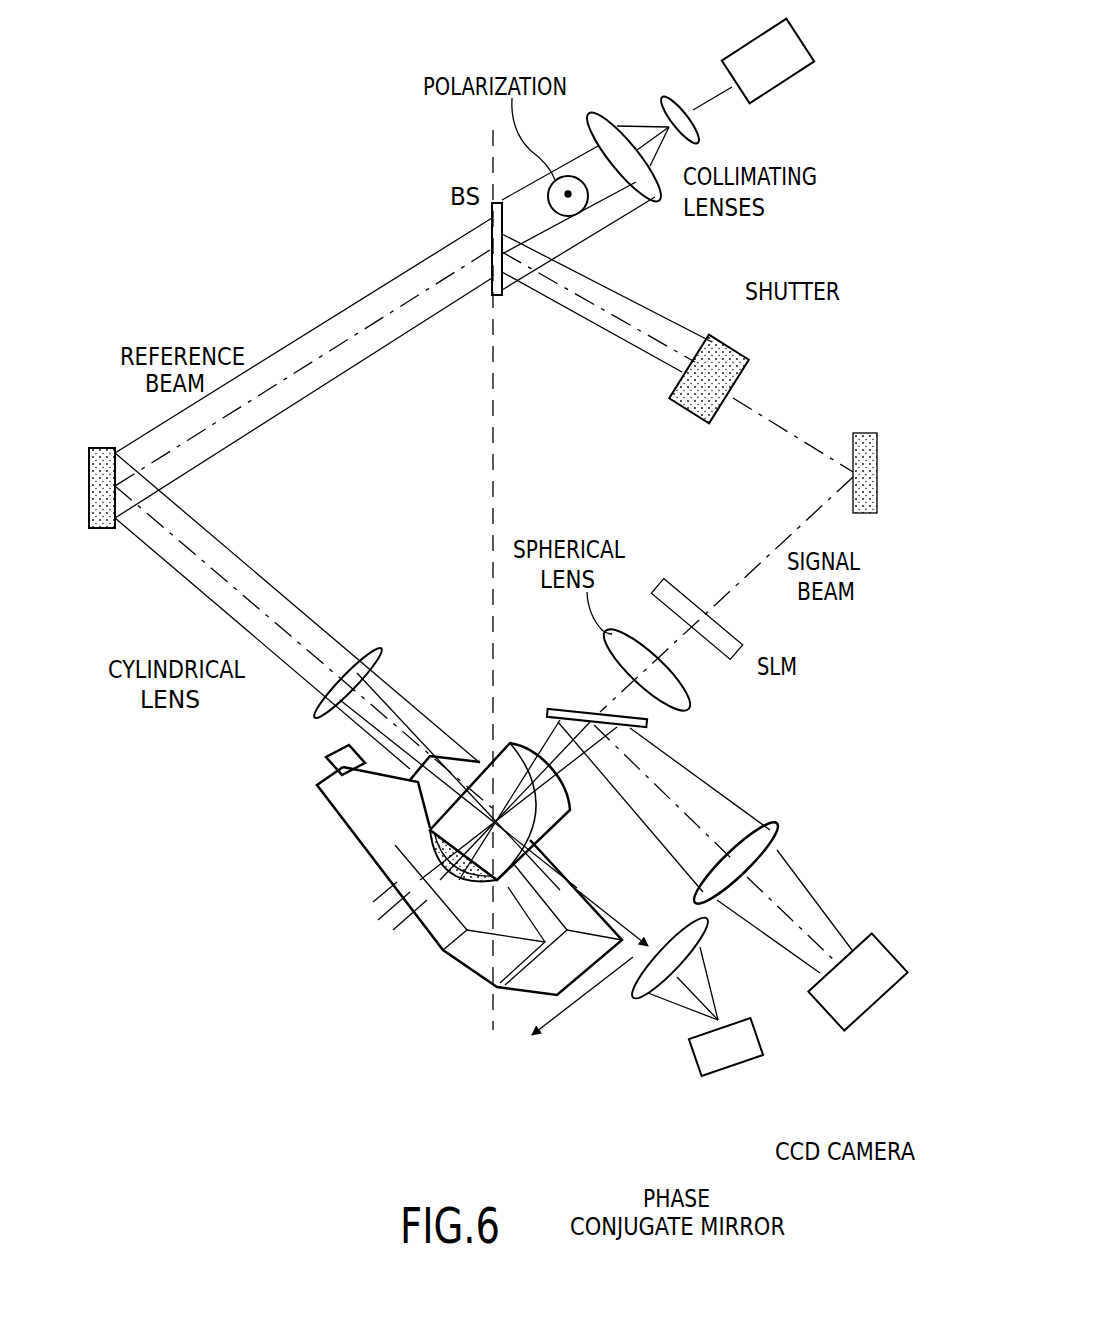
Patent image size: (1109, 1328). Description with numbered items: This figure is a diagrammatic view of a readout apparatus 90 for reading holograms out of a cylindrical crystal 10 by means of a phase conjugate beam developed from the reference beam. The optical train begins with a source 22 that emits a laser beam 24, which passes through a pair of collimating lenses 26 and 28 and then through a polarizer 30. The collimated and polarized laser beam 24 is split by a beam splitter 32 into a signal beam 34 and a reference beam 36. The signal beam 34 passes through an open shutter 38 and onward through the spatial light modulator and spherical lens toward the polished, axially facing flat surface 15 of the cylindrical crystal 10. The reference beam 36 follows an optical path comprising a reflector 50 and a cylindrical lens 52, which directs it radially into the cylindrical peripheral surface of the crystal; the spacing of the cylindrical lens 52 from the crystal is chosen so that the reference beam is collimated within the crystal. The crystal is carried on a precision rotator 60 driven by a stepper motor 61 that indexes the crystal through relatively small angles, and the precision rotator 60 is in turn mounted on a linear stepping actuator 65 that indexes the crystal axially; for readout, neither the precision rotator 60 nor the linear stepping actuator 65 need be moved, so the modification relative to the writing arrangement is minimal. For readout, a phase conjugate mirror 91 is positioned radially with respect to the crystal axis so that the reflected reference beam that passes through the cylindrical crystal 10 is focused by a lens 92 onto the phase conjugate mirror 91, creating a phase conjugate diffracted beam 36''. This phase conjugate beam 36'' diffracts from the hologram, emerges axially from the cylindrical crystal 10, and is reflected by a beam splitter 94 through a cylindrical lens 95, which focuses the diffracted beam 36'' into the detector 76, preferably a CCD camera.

The cylindrical crystal 10 is at (486, 750).
The axially facing flat surface 15 is at (560, 790).
The source 22 is at (770, 75).
The laser beam 24 is at (705, 95).
The collimating lens 26 is at (663, 100).
The collimating lens 28 is at (657, 200).
The polarizer 30 is at (568, 196).
The beam splitter 32 is at (490, 230).
The signal beam 34 is at (623, 343).
The reference beam 36 is at (346, 581).
The phase conjugate diffracted beam 36'' is at (636, 807).
The shutter 38 is at (733, 350).
The reflector 50 is at (100, 530).
The cylindrical lens 52 is at (320, 718).
The precision rotator 60 is at (407, 837).
The stepper motor 61 is at (333, 758).
The linear stepping actuator 65 is at (487, 970).
The detector 76 is at (858, 1032).
The readout apparatus 90 is at (354, 299).
The phase conjugate mirror 91 is at (695, 1072).
The lens 92 is at (634, 1000).
The beam splitter 94 is at (650, 724).
The cylindrical lens 95 is at (773, 824).